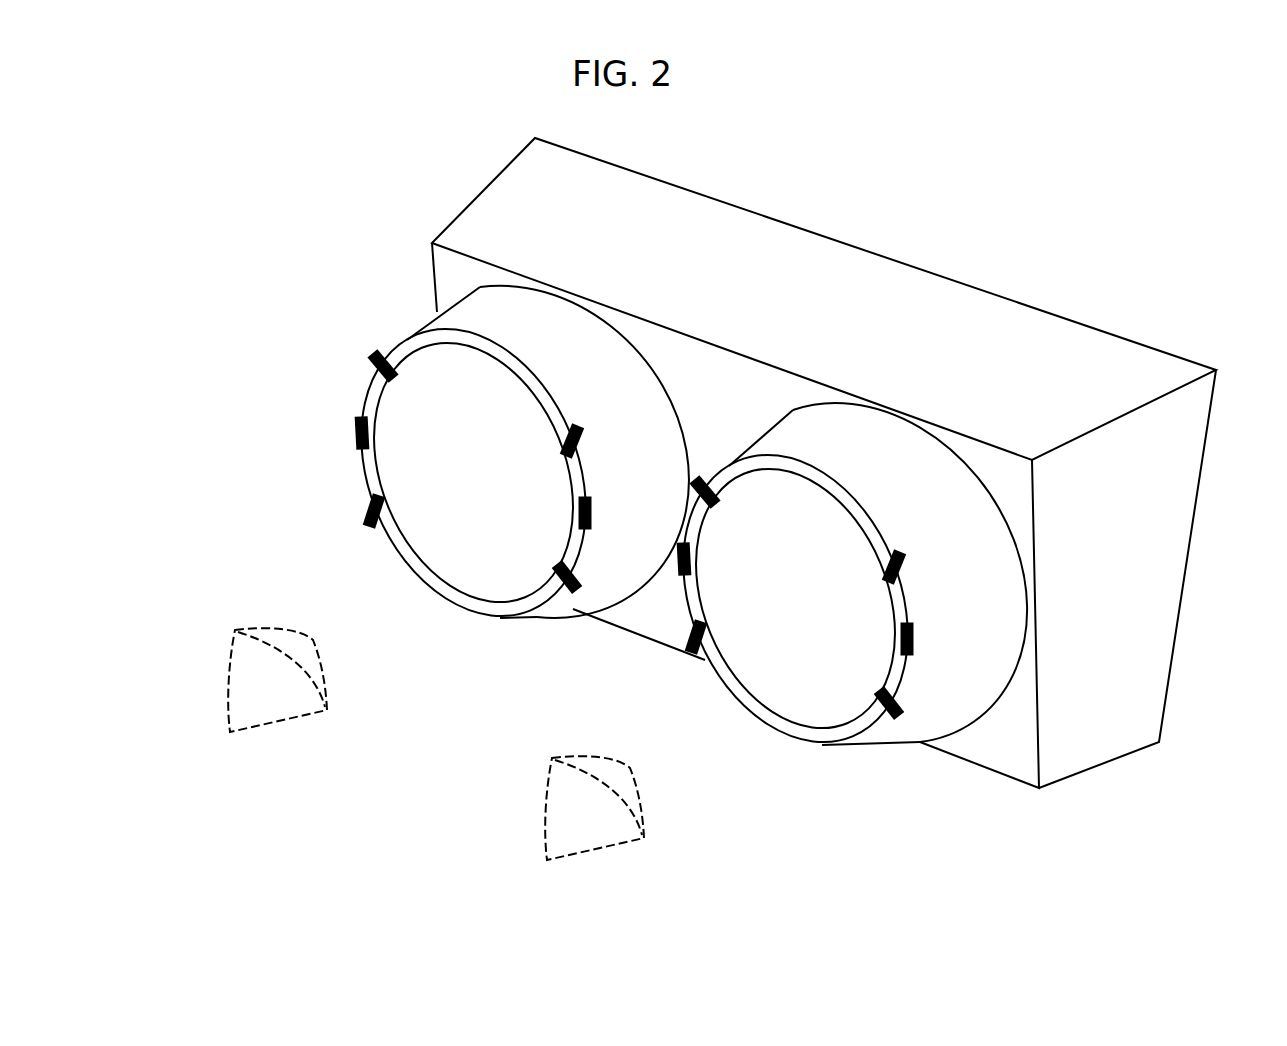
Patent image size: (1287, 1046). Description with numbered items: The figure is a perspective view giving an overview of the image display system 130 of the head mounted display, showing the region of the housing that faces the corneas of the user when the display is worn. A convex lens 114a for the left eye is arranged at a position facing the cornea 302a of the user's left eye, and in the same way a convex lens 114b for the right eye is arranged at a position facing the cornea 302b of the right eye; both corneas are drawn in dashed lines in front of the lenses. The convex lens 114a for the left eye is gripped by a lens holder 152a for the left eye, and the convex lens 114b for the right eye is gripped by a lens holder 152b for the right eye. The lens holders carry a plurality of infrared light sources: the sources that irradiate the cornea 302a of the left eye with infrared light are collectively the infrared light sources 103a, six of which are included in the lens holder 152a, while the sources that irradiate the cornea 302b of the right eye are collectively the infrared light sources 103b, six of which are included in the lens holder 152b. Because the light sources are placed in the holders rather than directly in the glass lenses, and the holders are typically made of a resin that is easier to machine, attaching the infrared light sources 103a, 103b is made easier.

The image display system 130 is at (857, 260).
The lens holder for the left eye 152a is at (408, 350).
The lens holder for the right eye 152b is at (818, 742).
The convex lens for the left eye 114a is at (467, 582).
The convex lens for the right eye 114b is at (770, 695).
The infrared light sources 103a is at (568, 575).
The infrared light sources 103b is at (795, 597).
The cornea of the left eye 302a is at (260, 623).
The cornea of the right eye 302b is at (617, 757).